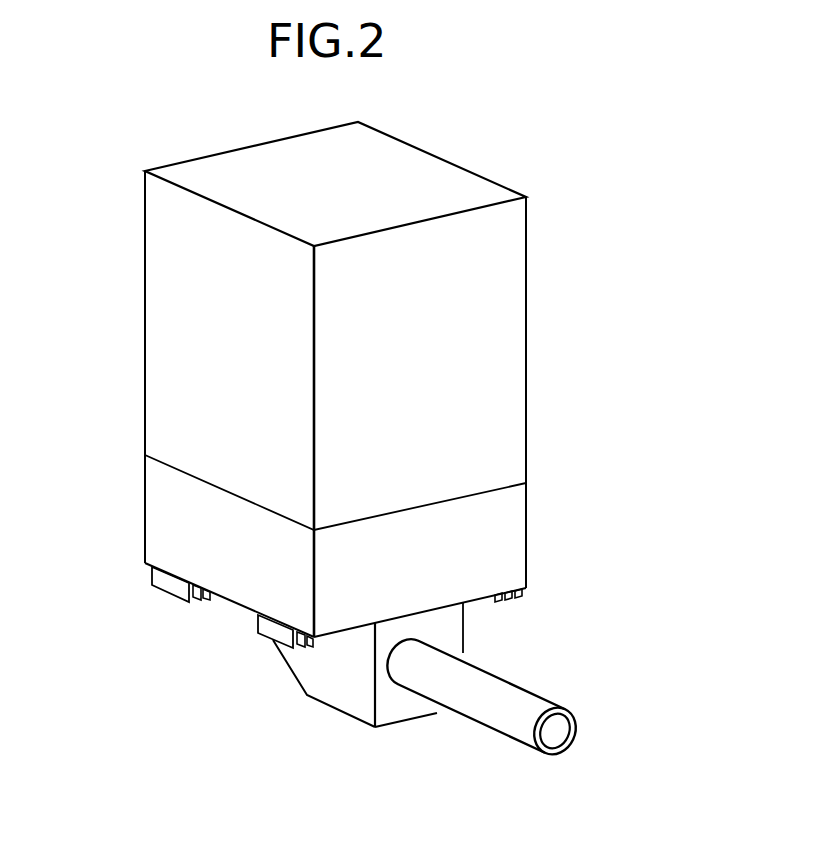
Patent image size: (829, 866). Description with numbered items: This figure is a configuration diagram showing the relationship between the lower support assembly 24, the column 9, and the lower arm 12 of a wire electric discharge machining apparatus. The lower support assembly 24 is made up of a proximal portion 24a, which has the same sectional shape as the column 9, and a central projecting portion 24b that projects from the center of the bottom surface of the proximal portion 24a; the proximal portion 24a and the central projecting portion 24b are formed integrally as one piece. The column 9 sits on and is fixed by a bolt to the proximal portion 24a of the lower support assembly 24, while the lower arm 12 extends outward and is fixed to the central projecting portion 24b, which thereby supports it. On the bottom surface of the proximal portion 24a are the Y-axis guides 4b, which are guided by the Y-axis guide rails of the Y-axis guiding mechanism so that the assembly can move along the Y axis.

The column 9 is at (526, 282).
The proximal portion 24a is at (517, 503).
The lower support assembly 24 is at (463, 635).
The central projecting portion 24b is at (465, 650).
The lower arm 12 is at (523, 685).
The Y-axis guides 4b is at (162, 590).